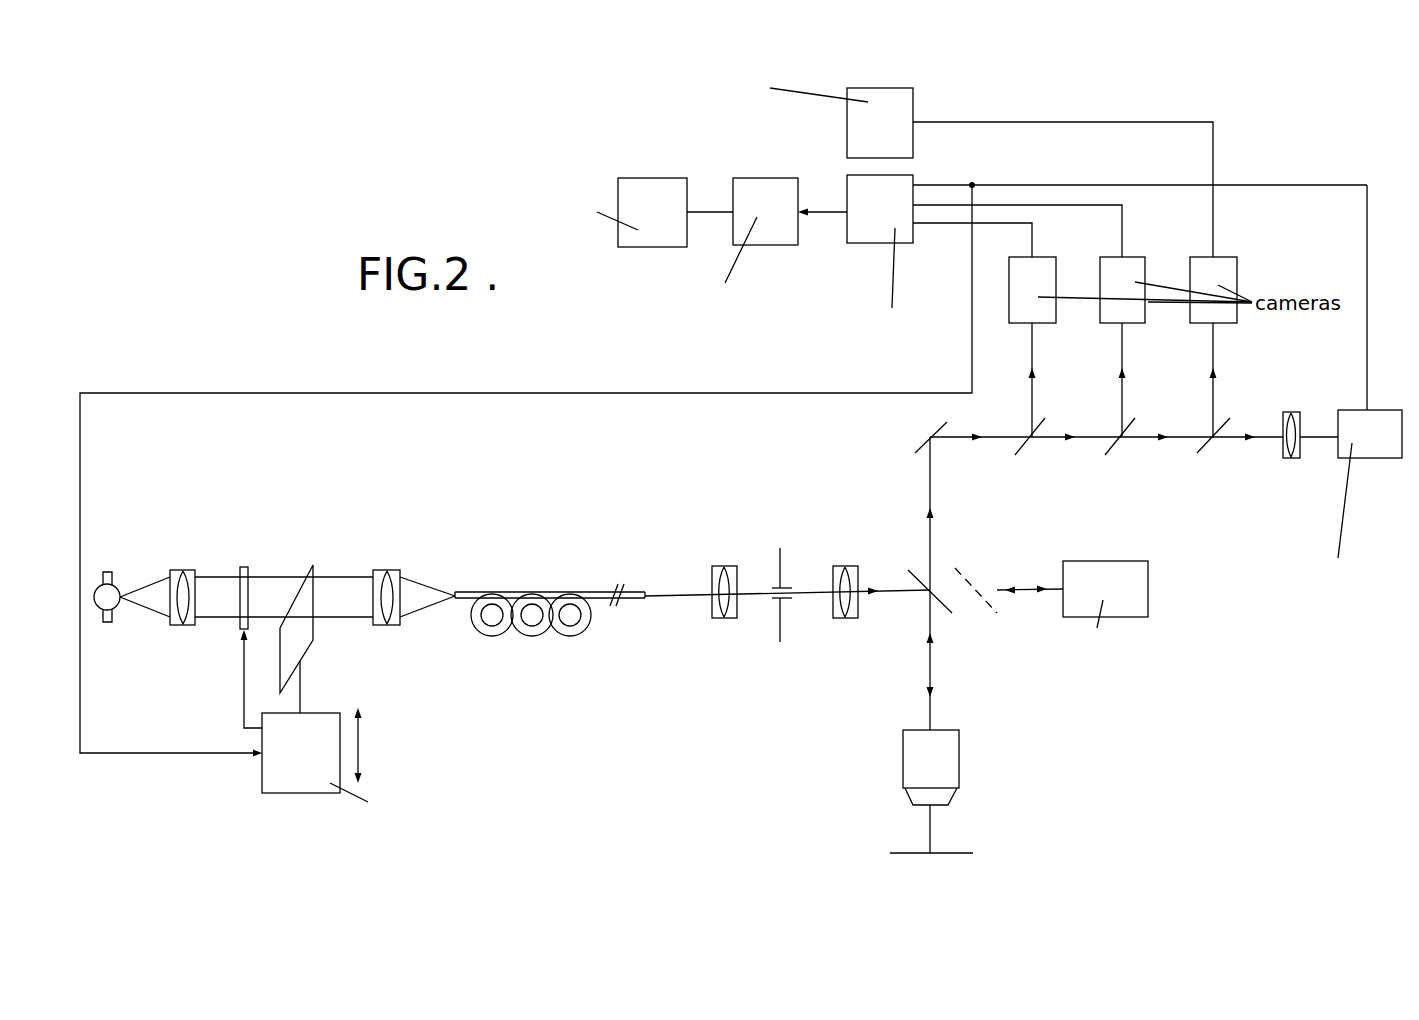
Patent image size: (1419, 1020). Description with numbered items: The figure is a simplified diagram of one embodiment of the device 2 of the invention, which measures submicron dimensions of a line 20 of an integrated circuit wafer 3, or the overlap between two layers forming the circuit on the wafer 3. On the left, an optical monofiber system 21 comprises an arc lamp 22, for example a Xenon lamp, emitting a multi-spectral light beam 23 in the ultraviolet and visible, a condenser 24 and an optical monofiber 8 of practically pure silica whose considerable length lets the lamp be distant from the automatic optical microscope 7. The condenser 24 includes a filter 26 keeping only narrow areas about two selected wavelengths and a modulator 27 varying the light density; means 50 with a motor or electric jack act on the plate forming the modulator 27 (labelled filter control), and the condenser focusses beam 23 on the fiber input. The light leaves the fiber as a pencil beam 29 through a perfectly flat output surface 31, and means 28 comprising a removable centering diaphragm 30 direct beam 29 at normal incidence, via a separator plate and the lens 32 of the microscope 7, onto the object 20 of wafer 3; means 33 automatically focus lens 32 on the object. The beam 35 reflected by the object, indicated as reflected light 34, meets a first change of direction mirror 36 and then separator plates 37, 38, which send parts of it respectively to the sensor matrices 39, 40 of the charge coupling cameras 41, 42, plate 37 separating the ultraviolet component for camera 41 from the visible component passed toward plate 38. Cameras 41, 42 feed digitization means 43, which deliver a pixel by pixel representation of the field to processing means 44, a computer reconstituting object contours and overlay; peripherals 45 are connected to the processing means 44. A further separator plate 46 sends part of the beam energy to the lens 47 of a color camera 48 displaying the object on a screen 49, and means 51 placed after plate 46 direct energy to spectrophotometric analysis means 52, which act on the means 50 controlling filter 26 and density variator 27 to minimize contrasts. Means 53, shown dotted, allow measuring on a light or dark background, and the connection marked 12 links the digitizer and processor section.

The device 2 is at (1019, 106).
The integrated circuit wafer 3 is at (960, 852).
The automatic optical microscope 7 is at (1238, 586).
The optical monofiber 8 is at (540, 585).
The processing unit 12 is at (816, 244).
The line 20 is at (922, 846).
The optical monofiber system 21 is at (473, 521).
The arc lamp 22 is at (120, 580).
The multi-spectral light beam 23 is at (160, 580).
The condenser 24 is at (322, 541).
The filter 26 is at (244, 567).
The modulator 27 is at (297, 635).
The means for directing the beam 28 is at (772, 671).
The pencil beam 29 is at (674, 592).
The diaphragm 30 is at (782, 548).
The output surface 31 is at (645, 598).
The lens 32 is at (940, 748).
The automatic focussing means 33 is at (1113, 575).
The reflected light beam 34 is at (898, 448).
The reflected pencil beam 35 is at (932, 480).
The first change of direction mirror 36 is at (943, 422).
The separator plate 37 is at (1042, 425).
The separator plate 38 is at (1130, 422).
The sensor matrix 39 is at (1035, 328).
The sensor matrix 40 is at (1123, 328).
The U.V. camera 41 is at (1035, 273).
The matrix camera 42 is at (1125, 268).
The digitization means 43 is at (872, 220).
The processing means 44 is at (768, 197).
The peripherals 45 is at (648, 200).
The separator plate 46 is at (1210, 445).
The lens 47 is at (1215, 328).
The color camera 48 is at (1220, 270).
The screen 49 is at (878, 123).
The light density varying means 50 is at (330, 740).
The directing means 51 is at (1320, 454).
The spectrophotometric analysis means 52 is at (1367, 437).
The measuring means 53 is at (968, 577).